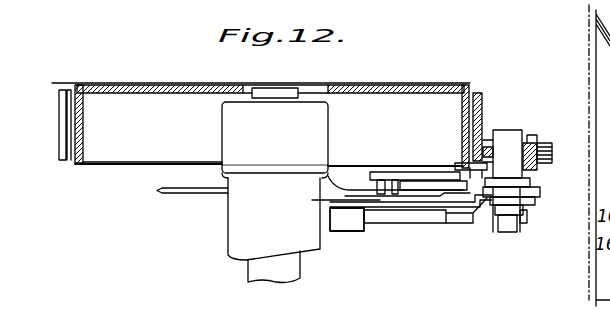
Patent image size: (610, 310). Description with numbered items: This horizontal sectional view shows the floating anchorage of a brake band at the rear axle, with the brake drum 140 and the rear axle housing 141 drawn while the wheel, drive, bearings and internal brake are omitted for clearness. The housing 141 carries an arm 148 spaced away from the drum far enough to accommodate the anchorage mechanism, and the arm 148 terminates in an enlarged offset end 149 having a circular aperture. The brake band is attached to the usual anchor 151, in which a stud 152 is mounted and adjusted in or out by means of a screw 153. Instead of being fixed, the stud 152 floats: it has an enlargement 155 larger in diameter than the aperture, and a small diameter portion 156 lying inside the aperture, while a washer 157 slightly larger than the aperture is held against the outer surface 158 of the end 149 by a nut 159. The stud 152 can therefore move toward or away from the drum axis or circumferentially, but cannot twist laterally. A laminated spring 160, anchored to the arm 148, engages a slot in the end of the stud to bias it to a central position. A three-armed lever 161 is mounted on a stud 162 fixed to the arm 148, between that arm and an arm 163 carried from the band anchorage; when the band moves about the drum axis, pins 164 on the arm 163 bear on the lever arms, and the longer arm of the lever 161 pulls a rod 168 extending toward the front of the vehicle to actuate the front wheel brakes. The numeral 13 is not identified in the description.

The section line 13 is at (333, 193).
The brake drum 140 is at (82, 139).
The rear axle housing 141 is at (275, 140).
The arm 148 is at (323, 208).
The enlarged offset end 149 is at (533, 190).
The anchor 151 is at (531, 137).
The stud 152 is at (508, 140).
The screw 153 is at (543, 152).
The enlargement 155 is at (546, 179).
The small diameter portion 156 is at (527, 203).
The washer 157 is at (478, 226).
The outer surface 158 is at (527, 207).
The nut 159 is at (495, 214).
The spring 160 is at (380, 220).
The three-armed lever 161 is at (416, 188).
The stud 162 is at (420, 209).
The arm 163 is at (375, 178).
The pin 164 is at (390, 190).
The rod 168 is at (166, 194).